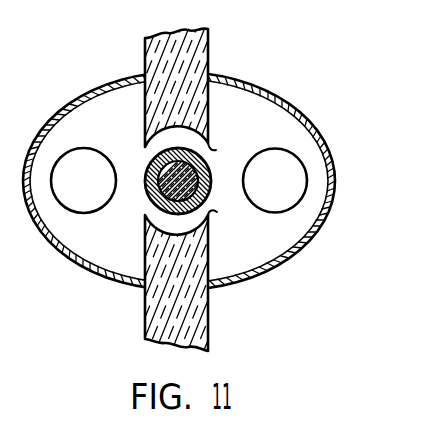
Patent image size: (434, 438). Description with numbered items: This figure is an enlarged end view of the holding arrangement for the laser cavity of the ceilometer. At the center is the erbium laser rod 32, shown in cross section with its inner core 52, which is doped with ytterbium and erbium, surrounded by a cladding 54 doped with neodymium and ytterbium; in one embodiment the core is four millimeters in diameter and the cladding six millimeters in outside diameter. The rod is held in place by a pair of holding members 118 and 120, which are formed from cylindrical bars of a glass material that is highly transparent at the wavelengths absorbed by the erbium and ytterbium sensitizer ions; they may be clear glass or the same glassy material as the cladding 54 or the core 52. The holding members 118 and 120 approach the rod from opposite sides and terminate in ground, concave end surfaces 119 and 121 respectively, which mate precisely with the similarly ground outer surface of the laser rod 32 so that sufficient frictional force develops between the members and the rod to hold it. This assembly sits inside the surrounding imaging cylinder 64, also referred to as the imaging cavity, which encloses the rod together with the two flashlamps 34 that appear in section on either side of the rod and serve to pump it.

The imaging cylinder 64 is at (97, 73).
The flashlamps 34 is at (96, 189).
The laser rod 32 is at (138, 176).
The core 52 is at (163, 194).
The cladding 54 is at (211, 186).
The holding member 118 is at (209, 108).
The concave end surface 119 is at (229, 151).
The holding member 120 is at (209, 262).
The concave end surface 121 is at (217, 212).